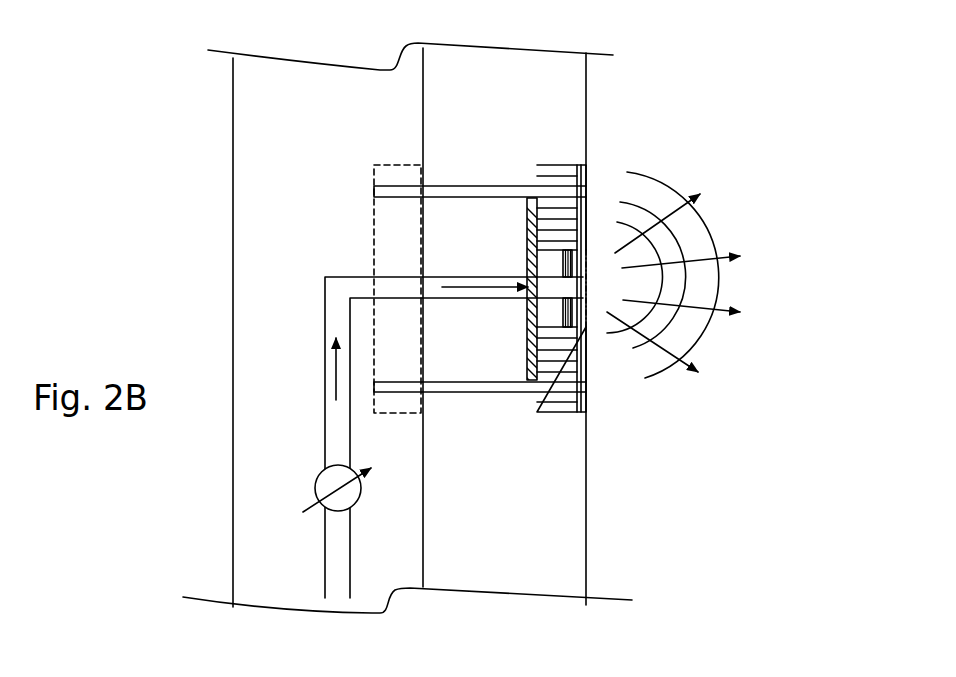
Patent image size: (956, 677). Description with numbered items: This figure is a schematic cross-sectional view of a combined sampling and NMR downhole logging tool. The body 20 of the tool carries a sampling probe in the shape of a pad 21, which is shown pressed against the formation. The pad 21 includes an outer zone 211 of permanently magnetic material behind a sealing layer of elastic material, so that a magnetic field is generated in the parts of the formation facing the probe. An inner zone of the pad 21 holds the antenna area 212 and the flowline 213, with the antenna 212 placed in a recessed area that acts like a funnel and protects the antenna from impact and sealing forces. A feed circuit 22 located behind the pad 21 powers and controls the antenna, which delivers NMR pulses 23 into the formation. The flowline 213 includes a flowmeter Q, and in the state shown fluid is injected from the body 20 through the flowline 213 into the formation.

The body 20 is at (284, 148).
The pad 21 is at (473, 133).
The feed circuit 22 is at (527, 258).
The NMR pulses 23 is at (712, 162).
The outer zone 211 is at (585, 397).
The antenna area 212 is at (572, 258).
The flowline 213 is at (507, 298).
The flowmeter Q is at (362, 492).